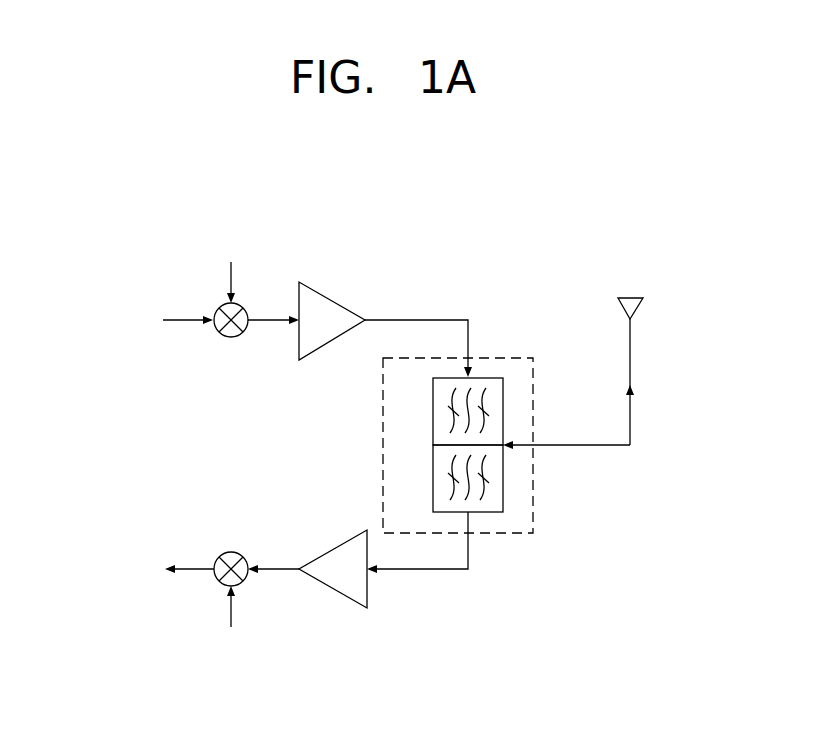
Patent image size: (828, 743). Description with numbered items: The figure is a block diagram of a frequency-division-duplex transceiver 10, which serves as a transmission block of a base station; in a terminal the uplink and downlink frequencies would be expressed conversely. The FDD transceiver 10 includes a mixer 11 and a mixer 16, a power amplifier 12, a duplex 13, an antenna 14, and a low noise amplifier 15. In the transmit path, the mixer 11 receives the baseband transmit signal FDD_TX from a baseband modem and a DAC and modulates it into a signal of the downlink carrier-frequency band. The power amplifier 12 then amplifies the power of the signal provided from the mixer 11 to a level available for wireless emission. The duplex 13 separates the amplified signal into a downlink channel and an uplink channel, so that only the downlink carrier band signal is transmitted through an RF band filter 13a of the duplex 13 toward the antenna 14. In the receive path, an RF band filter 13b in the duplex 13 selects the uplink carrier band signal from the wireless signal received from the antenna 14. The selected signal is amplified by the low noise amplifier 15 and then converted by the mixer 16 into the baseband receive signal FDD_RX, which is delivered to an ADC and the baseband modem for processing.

The FDD transceiver 10 is at (505, 201).
The mixer 11 is at (231, 338).
The power amplifier 12 is at (333, 298).
The duplex 13 is at (461, 445).
The RF band filter 13a is at (503, 413).
The RF band filter 13b is at (503, 480).
The antenna 14 is at (630, 297).
The low noise amplifier 15 is at (335, 548).
The mixer 16 is at (231, 552).